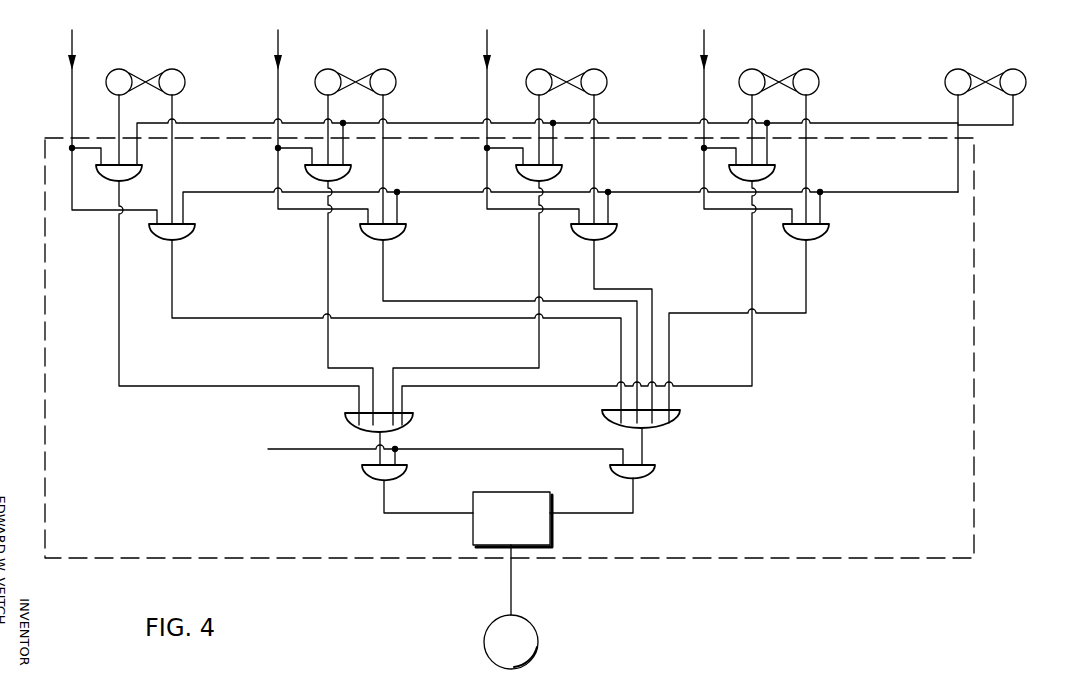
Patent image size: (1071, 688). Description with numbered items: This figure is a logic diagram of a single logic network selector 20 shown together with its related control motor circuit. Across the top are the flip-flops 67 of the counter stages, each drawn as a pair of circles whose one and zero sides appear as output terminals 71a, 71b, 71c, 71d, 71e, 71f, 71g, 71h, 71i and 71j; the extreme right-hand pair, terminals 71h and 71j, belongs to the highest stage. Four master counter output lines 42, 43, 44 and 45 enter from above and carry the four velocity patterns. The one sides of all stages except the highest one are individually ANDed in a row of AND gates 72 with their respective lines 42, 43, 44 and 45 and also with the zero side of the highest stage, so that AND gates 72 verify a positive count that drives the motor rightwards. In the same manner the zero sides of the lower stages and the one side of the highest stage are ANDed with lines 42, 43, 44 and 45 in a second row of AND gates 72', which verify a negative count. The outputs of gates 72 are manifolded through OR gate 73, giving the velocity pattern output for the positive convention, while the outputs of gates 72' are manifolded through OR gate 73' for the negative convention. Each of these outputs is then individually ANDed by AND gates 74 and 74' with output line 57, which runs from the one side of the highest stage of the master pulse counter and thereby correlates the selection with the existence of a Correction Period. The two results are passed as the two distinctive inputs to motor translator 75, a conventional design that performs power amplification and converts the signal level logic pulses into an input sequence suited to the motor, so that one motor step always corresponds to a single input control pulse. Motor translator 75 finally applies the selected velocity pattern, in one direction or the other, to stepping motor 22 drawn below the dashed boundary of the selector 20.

The logic network selector 20 is at (41, 273).
The stepping motor 22 is at (523, 652).
The master counter output line 42 is at (72, 52).
The master counter output line 43 is at (278, 52).
The master counter output line 44 is at (487, 52).
The master counter output line 45 is at (704, 54).
The output line 57 is at (295, 449).
The flip-flops 67 is at (989, 129).
The flip-flop one output terminal 71a is at (119, 100).
The flip-flop zero output terminal 71b is at (172, 108).
The flip-flop one output terminal 71c is at (328, 107).
The flip-flop one output terminal 71d is at (539, 107).
The flip-flop zero output terminal 71e is at (594, 107).
The flip-flop zero output terminal 71f is at (383, 107).
The flip-flop one output terminal 71g is at (752, 107).
The flip-flop one output terminal 71h is at (958, 108).
The flip-flop zero output terminal 71i is at (806, 107).
The flip-flop zero output terminal 71j is at (1013, 126).
The AND gates 72 is at (472, 166).
The AND gates 72' is at (514, 226).
The OR gate 73 is at (400, 433).
The OR gate 73' is at (666, 432).
The AND gate 74 is at (417, 488).
The AND gate 74' is at (628, 486).
The motor translator 75 is at (500, 529).